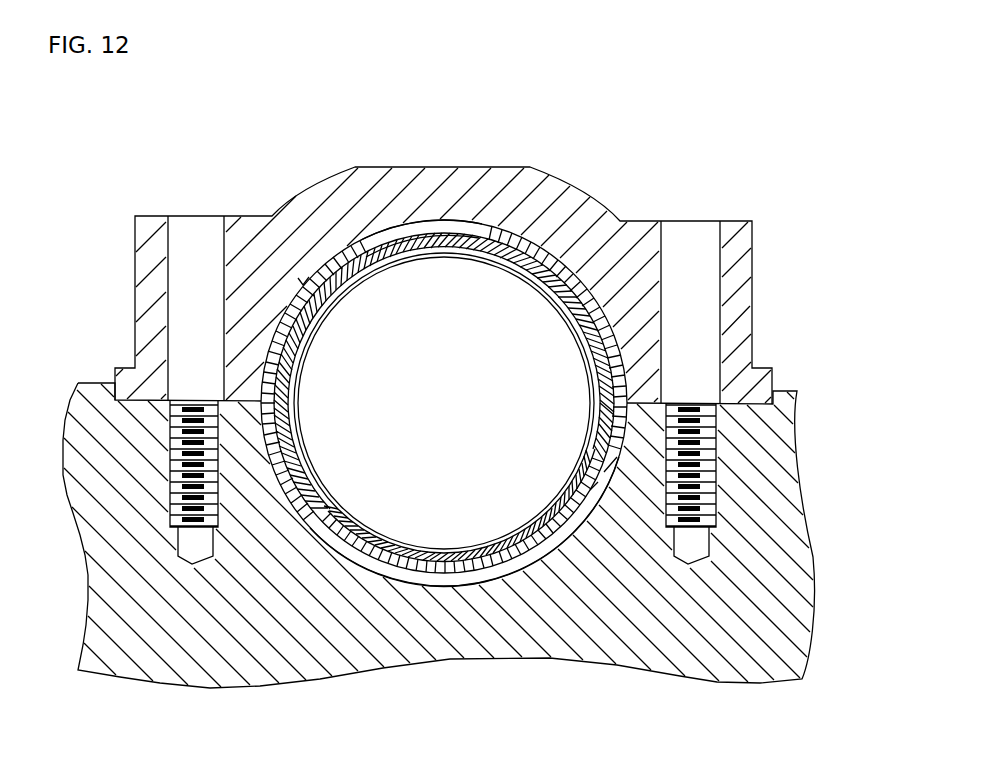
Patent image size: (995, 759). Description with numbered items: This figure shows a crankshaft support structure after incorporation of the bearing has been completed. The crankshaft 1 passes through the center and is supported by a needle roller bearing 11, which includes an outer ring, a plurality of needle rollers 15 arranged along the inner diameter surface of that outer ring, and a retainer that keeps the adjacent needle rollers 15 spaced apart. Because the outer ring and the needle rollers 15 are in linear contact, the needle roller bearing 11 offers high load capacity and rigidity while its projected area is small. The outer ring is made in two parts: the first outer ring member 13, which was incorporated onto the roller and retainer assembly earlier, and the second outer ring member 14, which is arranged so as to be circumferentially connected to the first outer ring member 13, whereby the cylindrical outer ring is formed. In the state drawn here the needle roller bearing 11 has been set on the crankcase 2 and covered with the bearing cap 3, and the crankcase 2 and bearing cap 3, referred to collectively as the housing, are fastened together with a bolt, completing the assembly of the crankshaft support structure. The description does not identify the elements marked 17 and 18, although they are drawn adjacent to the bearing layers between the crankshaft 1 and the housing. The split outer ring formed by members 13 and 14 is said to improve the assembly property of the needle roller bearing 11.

The crankshaft 1 is at (440, 285).
The crankcase 2 is at (553, 632).
The bearing cap 3 is at (540, 192).
The needle roller bearing 11 is at (295, 518).
The first outer ring member 13 is at (438, 578).
The second outer ring member 14 is at (385, 237).
The needle roller 15 is at (303, 283).
The intermediate bearing layer 17 is at (490, 244).
The lower ring segment 18 is at (382, 572).